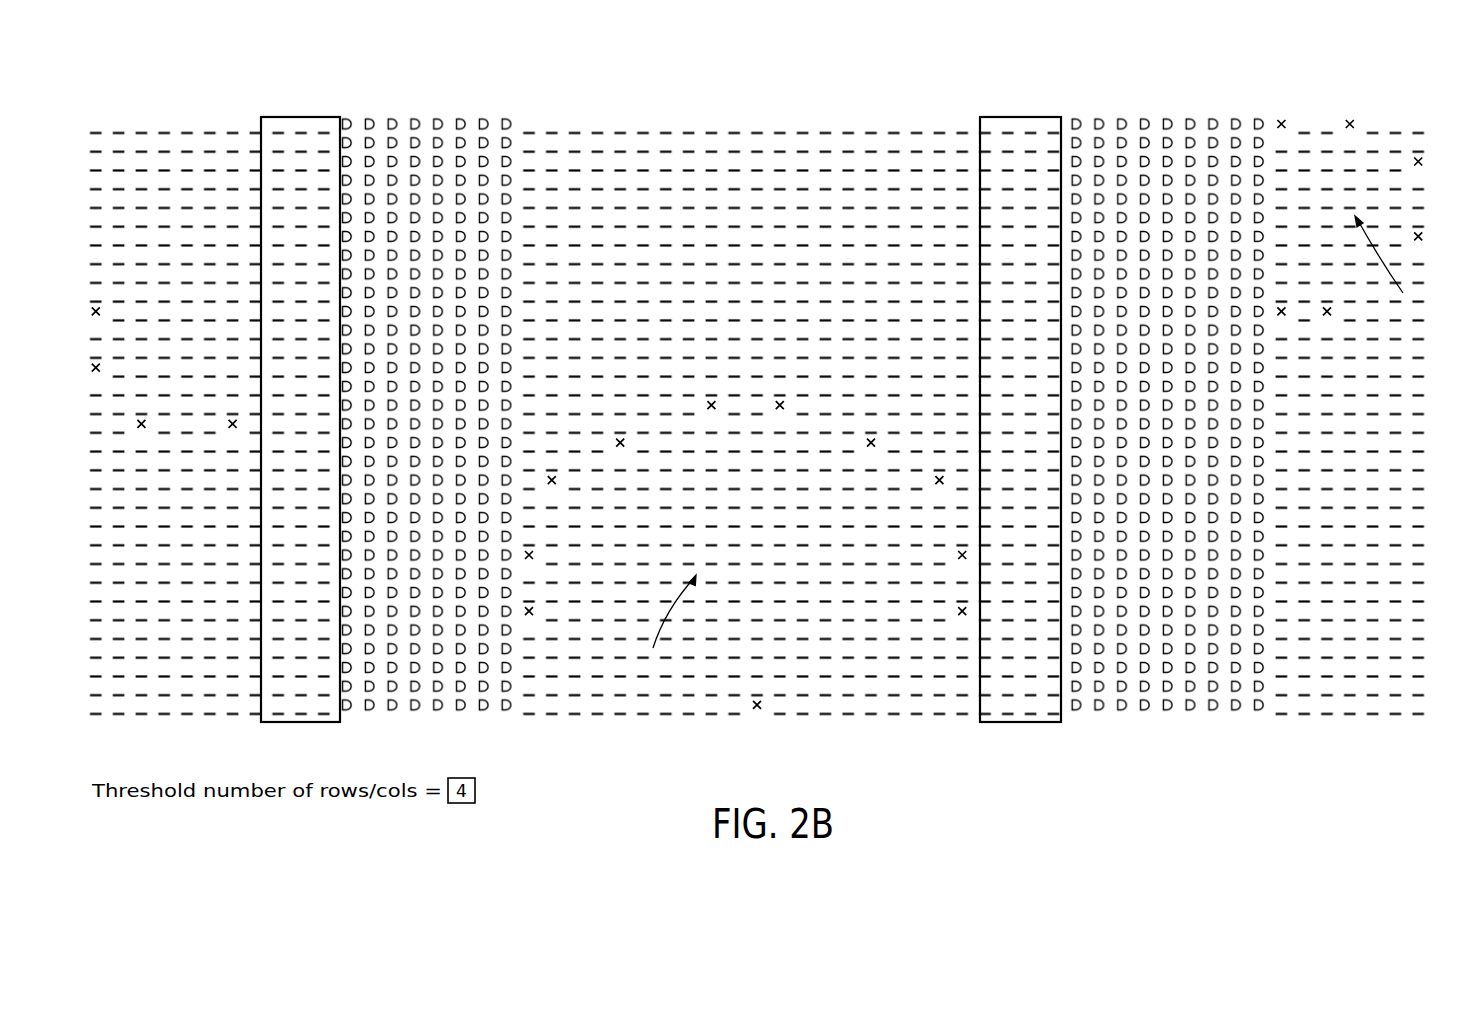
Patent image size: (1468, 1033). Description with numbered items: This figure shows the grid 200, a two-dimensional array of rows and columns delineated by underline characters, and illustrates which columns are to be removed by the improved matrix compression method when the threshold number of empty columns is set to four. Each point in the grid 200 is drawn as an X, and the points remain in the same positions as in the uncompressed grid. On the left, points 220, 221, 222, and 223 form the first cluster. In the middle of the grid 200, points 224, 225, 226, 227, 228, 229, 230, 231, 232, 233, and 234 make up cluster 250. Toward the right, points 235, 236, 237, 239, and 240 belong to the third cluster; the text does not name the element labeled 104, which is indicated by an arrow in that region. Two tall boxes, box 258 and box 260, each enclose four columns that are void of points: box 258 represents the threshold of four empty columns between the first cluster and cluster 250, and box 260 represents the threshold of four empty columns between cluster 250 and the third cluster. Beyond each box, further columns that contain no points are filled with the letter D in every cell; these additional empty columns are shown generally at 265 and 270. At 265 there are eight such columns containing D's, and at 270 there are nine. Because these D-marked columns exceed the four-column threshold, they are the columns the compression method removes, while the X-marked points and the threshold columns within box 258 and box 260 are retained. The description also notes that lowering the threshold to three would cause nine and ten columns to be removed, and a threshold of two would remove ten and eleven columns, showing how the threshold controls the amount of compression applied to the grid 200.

The grid 200 is at (757, 395).
The image sensor defect 104 is at (1389, 266).
The point 220 is at (101, 310).
The point 221 is at (101, 367).
The point 222 is at (140, 430).
The point 223 is at (232, 430).
The point 224 is at (536, 612).
The point 225 is at (536, 556).
The point 226 is at (558, 480).
The point 227 is at (614, 442).
The point 228 is at (705, 405).
The point 229 is at (786, 405).
The point 230 is at (877, 442).
The point 231 is at (933, 480).
The point 232 is at (956, 555).
The point 233 is at (956, 611).
The point 234 is at (763, 705).
The point 235 is at (1289, 312).
The point 236 is at (1332, 316).
The point 237 is at (1424, 236).
The point 239 is at (1352, 115).
The point 240 is at (1280, 115).
The cluster 250 is at (664, 623).
The box 258 is at (300, 723).
The box 260 is at (1037, 724).
The additional columns without points 265 is at (434, 709).
The additional columns without points 270 is at (1166, 708).